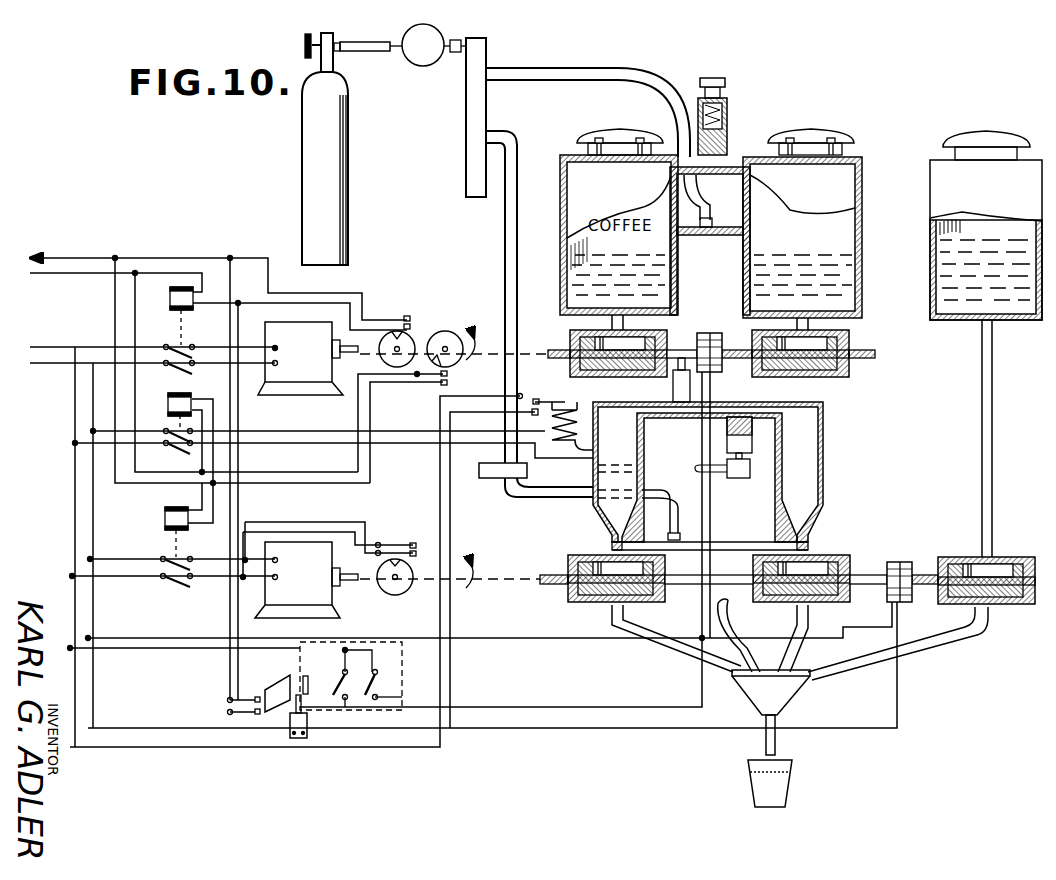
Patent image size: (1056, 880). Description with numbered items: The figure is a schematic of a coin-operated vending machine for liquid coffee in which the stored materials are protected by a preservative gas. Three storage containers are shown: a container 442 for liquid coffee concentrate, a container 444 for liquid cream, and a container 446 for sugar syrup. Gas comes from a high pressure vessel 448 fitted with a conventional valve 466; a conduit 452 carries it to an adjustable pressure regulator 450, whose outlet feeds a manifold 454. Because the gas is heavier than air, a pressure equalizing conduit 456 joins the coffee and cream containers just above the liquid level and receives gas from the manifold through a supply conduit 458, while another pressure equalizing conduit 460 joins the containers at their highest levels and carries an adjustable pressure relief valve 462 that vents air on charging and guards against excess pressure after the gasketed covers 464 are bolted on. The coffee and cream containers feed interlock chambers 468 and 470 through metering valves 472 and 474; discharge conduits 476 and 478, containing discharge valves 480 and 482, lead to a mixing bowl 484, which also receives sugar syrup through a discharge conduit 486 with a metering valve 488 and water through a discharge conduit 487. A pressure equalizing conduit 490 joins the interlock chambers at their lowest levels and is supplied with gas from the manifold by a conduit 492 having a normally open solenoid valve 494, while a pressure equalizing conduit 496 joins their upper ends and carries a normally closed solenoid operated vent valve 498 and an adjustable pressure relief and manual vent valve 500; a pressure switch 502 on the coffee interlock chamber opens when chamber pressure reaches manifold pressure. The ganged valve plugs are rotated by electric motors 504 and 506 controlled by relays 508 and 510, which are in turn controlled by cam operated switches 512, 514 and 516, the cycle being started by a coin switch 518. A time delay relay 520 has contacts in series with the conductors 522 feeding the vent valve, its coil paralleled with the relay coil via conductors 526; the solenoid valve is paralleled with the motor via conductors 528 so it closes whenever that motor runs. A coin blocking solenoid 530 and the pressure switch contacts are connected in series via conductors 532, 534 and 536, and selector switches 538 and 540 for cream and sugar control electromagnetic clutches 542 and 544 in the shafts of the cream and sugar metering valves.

The coffee container 442 is at (742, 265).
The cream container 444 is at (862, 283).
The sugar container 446 is at (935, 222).
The high pressure vessel 448 is at (348, 196).
The adjustable pressure regulator 450 is at (422, 66).
The conduit 452 is at (365, 51).
The manifold 454 is at (486, 106).
The pressure equalizing conduit 456 is at (720, 258).
The supply conduit 458 is at (640, 72).
The pressure equalizing conduit 460 is at (732, 150).
The adjustable pressure relief valve 462 is at (727, 82).
The gasketed covers 464 is at (622, 130).
The valve 466 is at (306, 36).
The interlock chamber 468 is at (600, 520).
The interlock chamber 470 is at (823, 468).
The metering valve 472 is at (572, 332).
The metering valve 474 is at (849, 348).
The discharge conduit 476 is at (675, 648).
The discharge conduit 478 is at (795, 620).
The discharge valve 480 is at (570, 597).
The discharge valve 482 is at (842, 527).
The mixing bowl 484 is at (790, 698).
The discharge conduit 486 is at (920, 655).
The discharge conduit 487 is at (740, 668).
The metering valve 488 is at (948, 557).
The pressure equalizing conduit 490 is at (730, 540).
The conduit 492 is at (505, 245).
The normally open solenoid valve 494 is at (492, 487).
The pressure equalizing conduit 496 is at (665, 420).
The solenoid operated vent valve 498 is at (752, 468).
The adjustable pressure relief and manual vent valve 500 is at (673, 386).
The pressure switch 502 is at (553, 400).
The electric motor 504 is at (300, 372).
The electric motor 506 is at (320, 598).
The relay 508 is at (168, 292).
The relay 510 is at (165, 520).
The cam operated switch 512 is at (416, 298).
The cam operated switch 514 is at (430, 386).
The cam operated switch 516 is at (420, 530).
The coin switch 518 is at (262, 668).
The time delay relay 520 is at (166, 395).
The conductors 522 is at (275, 448).
The conductors 526 is at (200, 508).
The conductors 528 is at (280, 515).
The coin blocking solenoid 530 is at (285, 725).
The conductors 532 is at (205, 747).
The conductors 534 is at (440, 672).
The conductors 536 is at (165, 728).
The selector switch 538 is at (370, 688).
The selector switch 540 is at (338, 688).
The electromagnetic clutch 542 is at (706, 333).
The electromagnetic clutch 544 is at (898, 562).